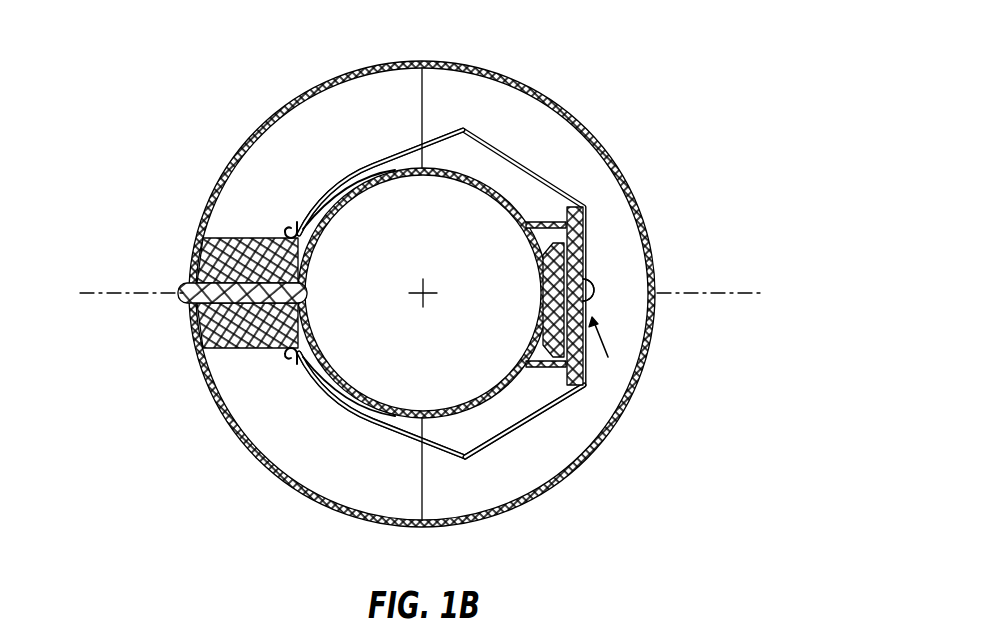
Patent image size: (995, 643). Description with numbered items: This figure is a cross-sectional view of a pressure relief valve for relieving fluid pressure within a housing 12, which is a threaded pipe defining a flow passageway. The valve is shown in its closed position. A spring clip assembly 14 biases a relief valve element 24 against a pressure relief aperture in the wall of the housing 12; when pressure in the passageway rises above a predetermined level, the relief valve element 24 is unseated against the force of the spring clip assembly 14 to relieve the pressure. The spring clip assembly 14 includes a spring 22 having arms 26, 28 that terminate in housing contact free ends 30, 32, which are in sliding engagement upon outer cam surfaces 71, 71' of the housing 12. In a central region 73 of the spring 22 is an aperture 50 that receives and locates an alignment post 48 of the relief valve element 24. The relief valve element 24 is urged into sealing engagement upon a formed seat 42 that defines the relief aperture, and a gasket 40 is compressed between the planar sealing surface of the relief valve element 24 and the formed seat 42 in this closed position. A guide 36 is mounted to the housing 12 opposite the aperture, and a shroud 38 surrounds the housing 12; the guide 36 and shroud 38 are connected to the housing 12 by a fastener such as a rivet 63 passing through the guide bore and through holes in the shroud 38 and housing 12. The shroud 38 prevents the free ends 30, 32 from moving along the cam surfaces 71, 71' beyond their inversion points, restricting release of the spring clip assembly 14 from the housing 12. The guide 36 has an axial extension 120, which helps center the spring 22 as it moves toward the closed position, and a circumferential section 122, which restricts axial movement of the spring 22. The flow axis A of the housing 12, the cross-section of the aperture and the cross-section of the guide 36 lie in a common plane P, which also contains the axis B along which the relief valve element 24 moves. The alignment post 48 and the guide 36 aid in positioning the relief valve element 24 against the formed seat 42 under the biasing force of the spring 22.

The housing 12 is at (441, 299).
The spring clip assembly 14 is at (635, 280).
The spring 22 is at (563, 432).
The relief valve element 24 is at (516, 300).
The arm 26 is at (381, 164).
The arm 28 is at (382, 424).
The free end 30 is at (271, 203).
The free end 32 is at (271, 385).
The guide 36 is at (218, 355).
The shroud 38 is at (426, 294).
The gasket 40 is at (499, 383).
The formed seat 42 is at (562, 195).
The alignment post 48 is at (648, 274).
The aperture 50 is at (647, 256).
The rivet 63 is at (202, 275).
The cam surface 71 is at (343, 174).
The cam surface 71' is at (342, 411).
The central region 73 is at (608, 349).
The axial extension 120 is at (210, 233).
The circumferential section 122 is at (365, 274).
The flow axis A is at (403, 275).
The axis B is at (116, 294).
The plane P is at (726, 297).